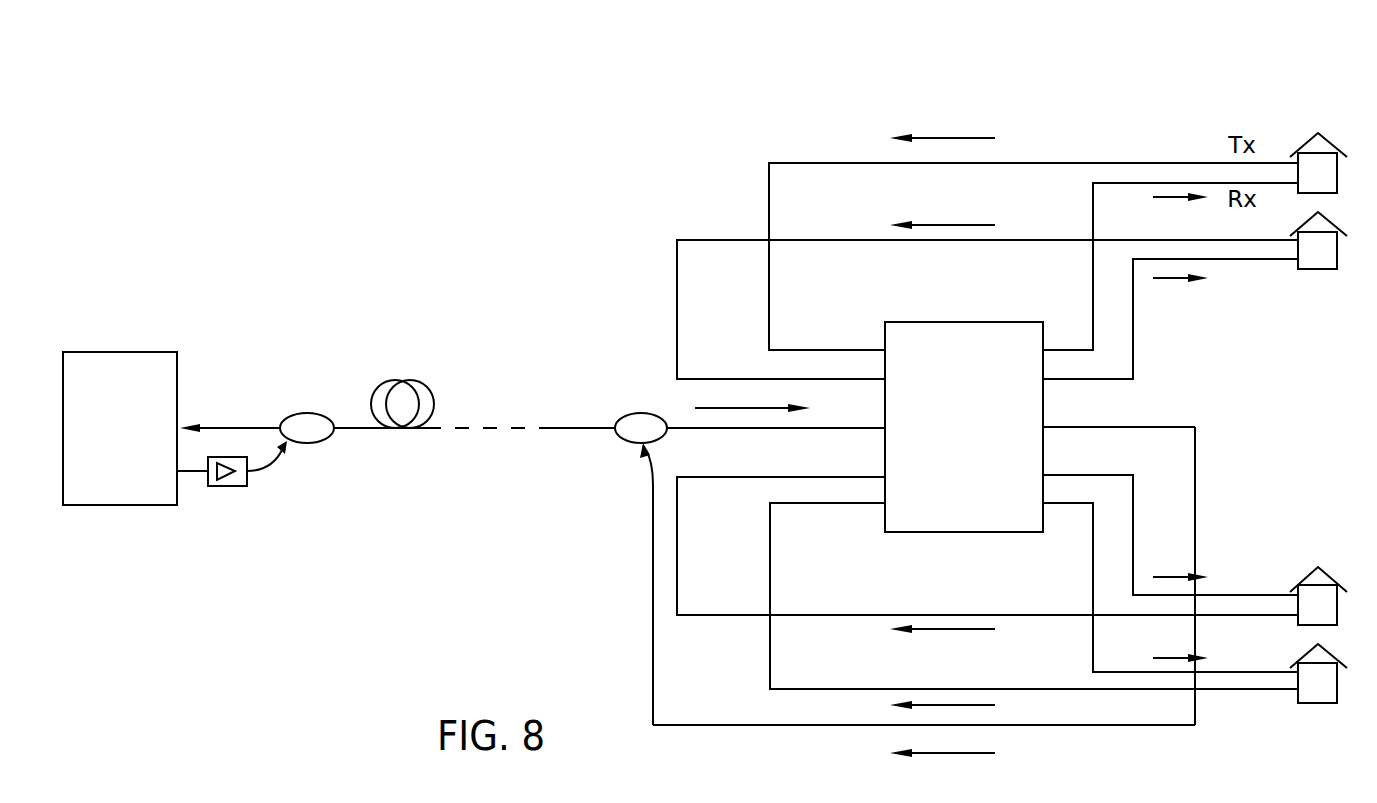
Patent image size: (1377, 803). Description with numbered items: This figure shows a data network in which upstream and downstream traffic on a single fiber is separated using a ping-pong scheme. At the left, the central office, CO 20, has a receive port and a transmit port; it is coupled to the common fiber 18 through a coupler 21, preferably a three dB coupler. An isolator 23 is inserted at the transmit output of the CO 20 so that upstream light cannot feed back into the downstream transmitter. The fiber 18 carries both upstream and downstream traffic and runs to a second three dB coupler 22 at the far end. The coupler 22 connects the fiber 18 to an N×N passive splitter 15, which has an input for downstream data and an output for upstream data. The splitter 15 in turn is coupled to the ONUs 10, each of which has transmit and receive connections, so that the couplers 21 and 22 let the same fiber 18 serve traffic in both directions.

The ONUs 10 is at (1335, 150).
The N×N passive splitter 15 is at (1043, 400).
The fiber 18 is at (570, 428).
The CO 20 is at (118, 352).
The coupler 21 is at (287, 413).
The second 3 dB coupler 22 is at (620, 413).
The isolator 23 is at (228, 487).